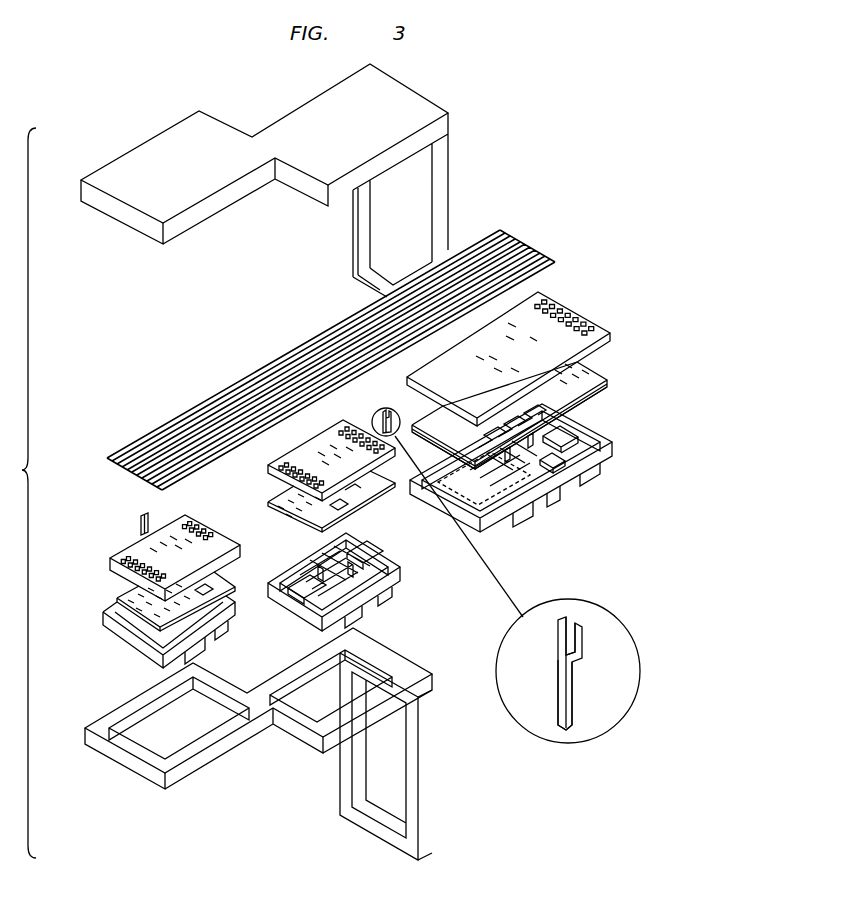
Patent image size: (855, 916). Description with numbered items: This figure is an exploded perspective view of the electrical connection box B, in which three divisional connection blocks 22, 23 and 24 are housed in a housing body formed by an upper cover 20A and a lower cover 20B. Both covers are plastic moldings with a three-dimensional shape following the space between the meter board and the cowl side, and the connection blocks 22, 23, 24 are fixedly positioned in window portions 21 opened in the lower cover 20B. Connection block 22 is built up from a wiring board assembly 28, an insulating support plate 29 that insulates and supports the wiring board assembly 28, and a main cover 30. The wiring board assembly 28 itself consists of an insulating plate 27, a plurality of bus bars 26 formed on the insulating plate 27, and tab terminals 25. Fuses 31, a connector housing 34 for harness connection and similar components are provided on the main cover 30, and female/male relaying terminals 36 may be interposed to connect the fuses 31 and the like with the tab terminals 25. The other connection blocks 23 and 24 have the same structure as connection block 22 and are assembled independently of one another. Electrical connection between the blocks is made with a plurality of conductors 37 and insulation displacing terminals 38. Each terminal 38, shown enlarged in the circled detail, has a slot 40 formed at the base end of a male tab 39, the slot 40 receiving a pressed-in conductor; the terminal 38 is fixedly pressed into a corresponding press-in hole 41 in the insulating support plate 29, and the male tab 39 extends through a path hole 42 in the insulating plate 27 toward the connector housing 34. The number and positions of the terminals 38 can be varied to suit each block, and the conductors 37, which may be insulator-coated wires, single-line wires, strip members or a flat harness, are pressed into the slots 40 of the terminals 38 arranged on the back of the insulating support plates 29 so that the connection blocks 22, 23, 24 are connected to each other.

The electrical connection box B is at (160, 332).
The upper cover 20A is at (445, 192).
The lower cover 20B is at (430, 800).
The window portions 21 is at (370, 775).
The connection block 22 is at (593, 493).
The connection block 23 is at (407, 565).
The connection block 24 is at (132, 647).
The tab terminals 25 is at (603, 438).
The bus bars 26 is at (597, 417).
The insulating plate 27 is at (598, 398).
The wiring board assembly 28 is at (657, 393).
The insulating support plate 29 is at (598, 330).
The main cover 30 is at (603, 460).
The fuses 31 is at (540, 530).
The connector housing 34 is at (193, 640).
The female/male relaying terminals 36 is at (548, 508).
The conductors 37 is at (280, 380).
The insulation displacing terminals 38 is at (563, 313).
The male tab 39 is at (573, 690).
The slot 40 is at (560, 638).
The press-in hole 41 is at (533, 338).
The path hole 42 is at (600, 378).